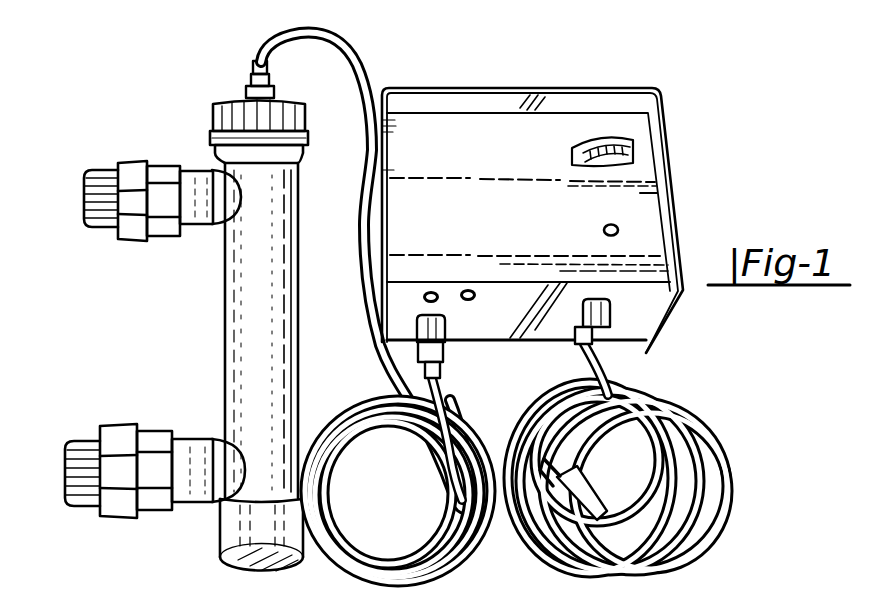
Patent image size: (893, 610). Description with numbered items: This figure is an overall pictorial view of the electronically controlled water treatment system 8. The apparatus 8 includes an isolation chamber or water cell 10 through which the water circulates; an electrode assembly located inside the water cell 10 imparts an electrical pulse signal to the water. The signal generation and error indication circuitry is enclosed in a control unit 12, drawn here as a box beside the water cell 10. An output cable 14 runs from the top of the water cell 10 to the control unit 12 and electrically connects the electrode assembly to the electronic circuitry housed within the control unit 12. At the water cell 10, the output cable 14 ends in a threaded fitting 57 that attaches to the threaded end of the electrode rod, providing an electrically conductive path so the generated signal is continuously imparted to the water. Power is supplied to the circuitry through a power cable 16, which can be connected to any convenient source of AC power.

The water treatment system 8 is at (550, 178).
The water cell 10 is at (240, 317).
The control unit 12 is at (627, 102).
The output cable 14 is at (349, 51).
The power cable 16 is at (687, 423).
The threaded fitting 57 is at (247, 94).